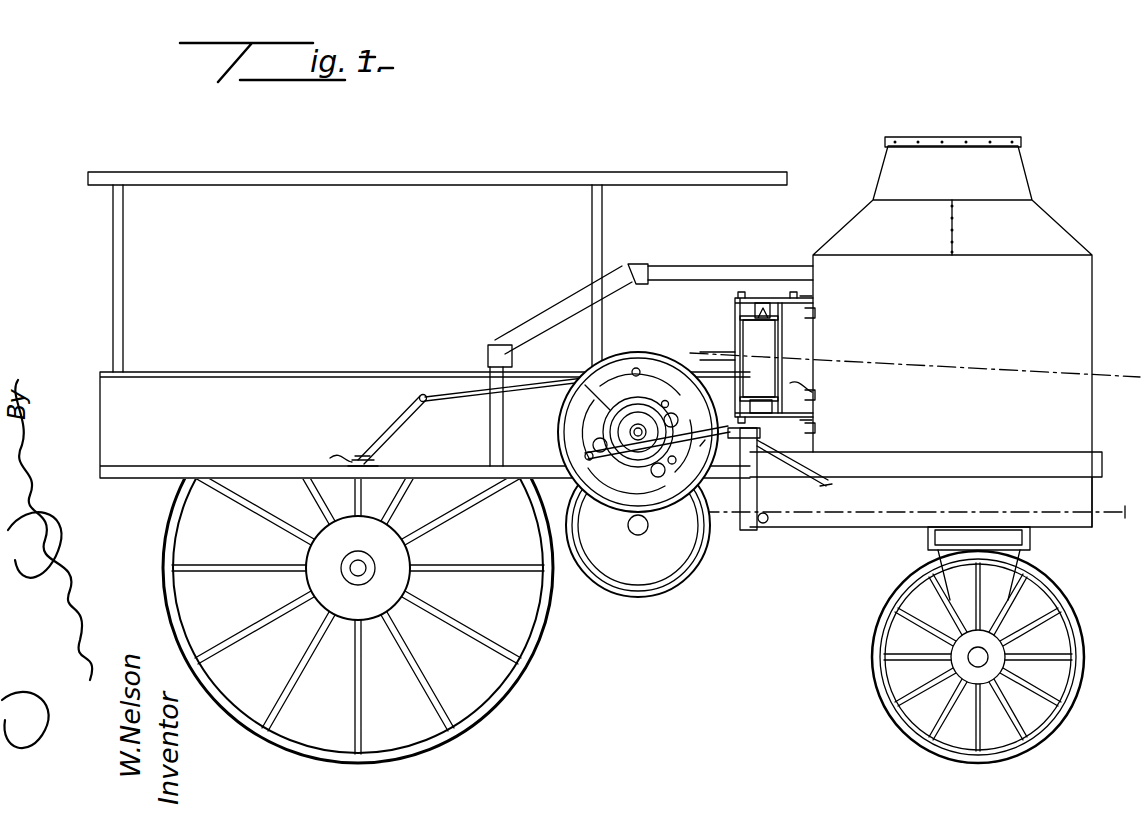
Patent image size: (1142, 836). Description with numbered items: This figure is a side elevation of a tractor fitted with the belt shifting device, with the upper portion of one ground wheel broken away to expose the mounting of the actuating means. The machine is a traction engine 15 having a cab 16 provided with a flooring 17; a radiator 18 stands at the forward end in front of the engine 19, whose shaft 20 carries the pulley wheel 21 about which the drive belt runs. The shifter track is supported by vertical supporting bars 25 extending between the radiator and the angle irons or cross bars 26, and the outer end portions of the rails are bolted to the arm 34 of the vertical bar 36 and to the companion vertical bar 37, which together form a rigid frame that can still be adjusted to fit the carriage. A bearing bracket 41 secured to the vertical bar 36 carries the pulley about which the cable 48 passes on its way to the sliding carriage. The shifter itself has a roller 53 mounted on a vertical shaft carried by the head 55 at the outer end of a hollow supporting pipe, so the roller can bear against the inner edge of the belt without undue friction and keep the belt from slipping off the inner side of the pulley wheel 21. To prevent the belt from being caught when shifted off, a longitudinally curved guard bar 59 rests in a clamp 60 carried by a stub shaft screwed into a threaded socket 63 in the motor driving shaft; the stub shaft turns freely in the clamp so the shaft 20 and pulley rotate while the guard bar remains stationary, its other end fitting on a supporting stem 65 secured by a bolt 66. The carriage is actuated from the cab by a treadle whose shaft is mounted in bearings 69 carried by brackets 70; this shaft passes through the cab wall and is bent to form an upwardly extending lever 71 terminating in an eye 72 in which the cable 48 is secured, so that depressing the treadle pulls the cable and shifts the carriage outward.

The traction engine 15 is at (698, 161).
The cab 16 is at (172, 376).
The flooring 17 is at (165, 478).
The radiator 18 is at (1040, 278).
The engine 19 is at (704, 370).
The shaft 20 is at (626, 462).
The pulley wheel 21 is at (656, 363).
The vertical supporting bars 25 is at (808, 372).
The cross bars 26 is at (813, 428).
The arm 34 is at (746, 305).
The vertical bar 36 is at (815, 330).
The vertical bar 37 is at (762, 350).
The bearing bracket 41 is at (736, 298).
The cable 48 is at (560, 383).
The roller 53 is at (808, 392).
The head 55 is at (812, 405).
The guard bar 59 is at (680, 480).
The clamp 60 is at (646, 362).
The threaded socket 63 is at (622, 436).
The supporting stem 65 is at (742, 470).
The bolt 66 is at (764, 478).
The bearings 69 is at (360, 456).
The brackets 70 is at (348, 463).
The lever 71 is at (400, 432).
The eye 72 is at (426, 395).